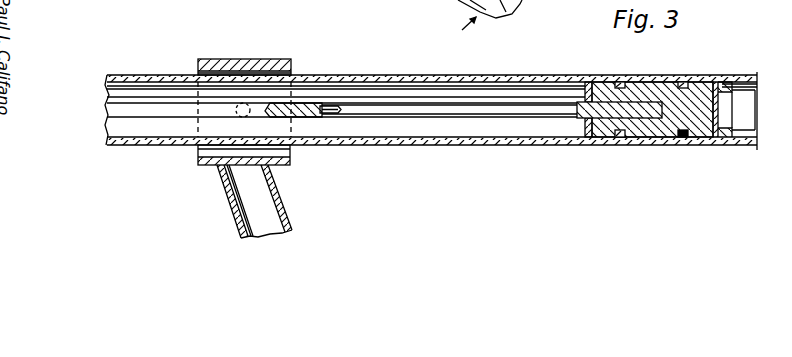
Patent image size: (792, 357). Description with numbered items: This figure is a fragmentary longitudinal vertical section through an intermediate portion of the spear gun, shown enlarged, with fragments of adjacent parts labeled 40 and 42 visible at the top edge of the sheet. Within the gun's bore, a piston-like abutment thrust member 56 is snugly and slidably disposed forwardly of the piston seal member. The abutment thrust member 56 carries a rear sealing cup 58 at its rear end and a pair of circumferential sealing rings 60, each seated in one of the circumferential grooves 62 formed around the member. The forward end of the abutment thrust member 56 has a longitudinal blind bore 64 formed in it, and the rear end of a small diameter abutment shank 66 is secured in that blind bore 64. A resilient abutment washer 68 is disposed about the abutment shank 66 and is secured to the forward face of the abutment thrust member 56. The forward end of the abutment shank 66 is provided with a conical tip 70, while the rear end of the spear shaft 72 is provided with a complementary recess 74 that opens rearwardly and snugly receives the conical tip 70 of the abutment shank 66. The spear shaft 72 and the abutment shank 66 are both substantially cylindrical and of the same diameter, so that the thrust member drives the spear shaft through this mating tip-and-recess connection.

The syringe barrel 40 is at (416, 7).
The needle hub 42 is at (456, 31).
The abutment thrust member 56 is at (581, 125).
The rear sealing cup 58 is at (733, 84).
The circumferential sealing rings 60 is at (625, 135).
The circumferential grooves 62 is at (683, 84).
The longitudinal blind bore 64 is at (600, 102).
The abutment shank 66 is at (505, 113).
The resilient abutment washer 68 is at (586, 97).
The conical tip 70 is at (334, 117).
The spear shaft 72 is at (147, 110).
The complementary recess 74 is at (333, 105).